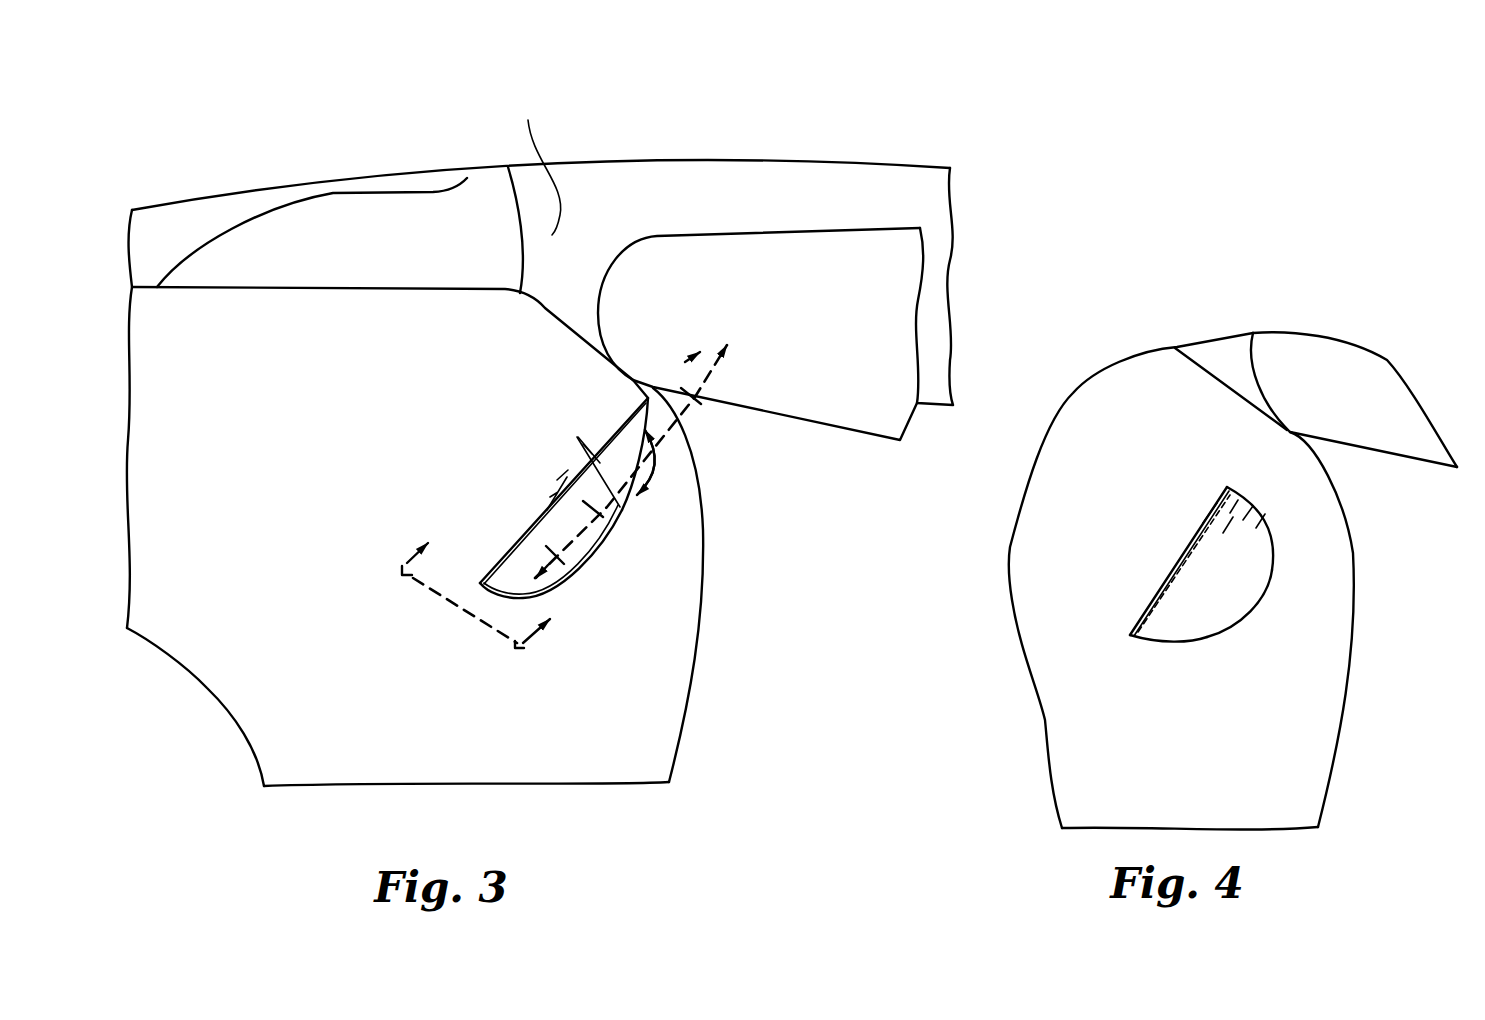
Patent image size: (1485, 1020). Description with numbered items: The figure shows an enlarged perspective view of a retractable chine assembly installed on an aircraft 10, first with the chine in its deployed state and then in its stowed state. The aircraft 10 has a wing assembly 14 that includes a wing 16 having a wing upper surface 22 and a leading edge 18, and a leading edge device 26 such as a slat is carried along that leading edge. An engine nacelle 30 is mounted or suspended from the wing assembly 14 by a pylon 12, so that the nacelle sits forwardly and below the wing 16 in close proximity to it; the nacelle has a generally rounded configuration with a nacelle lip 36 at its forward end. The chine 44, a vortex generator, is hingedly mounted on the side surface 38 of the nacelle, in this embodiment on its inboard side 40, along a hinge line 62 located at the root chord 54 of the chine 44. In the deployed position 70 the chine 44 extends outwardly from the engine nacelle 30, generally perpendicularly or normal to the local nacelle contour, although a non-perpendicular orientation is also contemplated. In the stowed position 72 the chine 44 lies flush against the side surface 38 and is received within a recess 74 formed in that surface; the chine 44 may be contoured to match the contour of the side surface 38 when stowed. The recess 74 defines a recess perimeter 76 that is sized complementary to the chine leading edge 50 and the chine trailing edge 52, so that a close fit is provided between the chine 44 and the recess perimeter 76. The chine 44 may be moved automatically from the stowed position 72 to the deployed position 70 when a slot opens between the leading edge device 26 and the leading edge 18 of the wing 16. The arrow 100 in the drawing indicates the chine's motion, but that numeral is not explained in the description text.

In FIG. 3, the aircraft 10 is at (949, 120).
In FIG. 4, the aircraft 10 is at (1296, 289).
In FIG. 3, the pylon 12 is at (246, 256).
In FIG. 3, the wing assembly 14 is at (723, 146).
In FIG. 3, the wing 16 is at (599, 211).
In FIG. 4, the wing 16 is at (1213, 367).
In FIG. 3, the leading edge 18 is at (537, 161).
In FIG. 3, the wing upper surface 22 is at (867, 165).
In FIG. 4, the wing upper surface 22 is at (1380, 357).
In FIG. 3, the leading edge device 26 is at (749, 330).
In FIG. 4, the leading edge device 26 is at (1333, 397).
In FIG. 3, the engine nacelle 30 is at (247, 366).
In FIG. 4, the engine nacelle 30 is at (1116, 447).
In FIG. 3, the nacelle lip 36 is at (207, 690).
In FIG. 3, the side surface 38 is at (466, 744).
In FIG. 4, the side surface 38 is at (1190, 802).
In FIG. 3, the inboard side 40 is at (532, 729).
In FIG. 4, the inboard side 40 is at (1189, 801).
In FIG. 3, the chine 44 is at (577, 450).
In FIG. 4, the chine 44 is at (1203, 586).
In FIG. 3, the chine leading edge 50 is at (567, 480).
In FIG. 4, the chine leading edge 50 is at (1228, 620).
In FIG. 3, the chine trailing edge 52 is at (610, 407).
In FIG. 4, the chine trailing edge 52 is at (1247, 493).
In FIG. 3, the root chord 54 is at (531, 454).
In FIG. 4, the root chord 54 is at (1173, 563).
In FIG. 3, the hinge line 62 is at (575, 442).
In FIG. 4, the hinge line 62 is at (1190, 533).
In FIG. 3, the deployed position 70 is at (710, 548).
In FIG. 4, the stowed position 72 is at (1366, 595).
In FIG. 3, the recess 74 is at (588, 543).
In FIG. 3, the recess perimeter 76 is at (566, 583).
In FIG. 4, the recess perimeter 76 is at (1208, 638).
In FIG. 3, the access opening 100 is at (662, 403).
In FIG. 4, the access opening 100 is at (1284, 527).